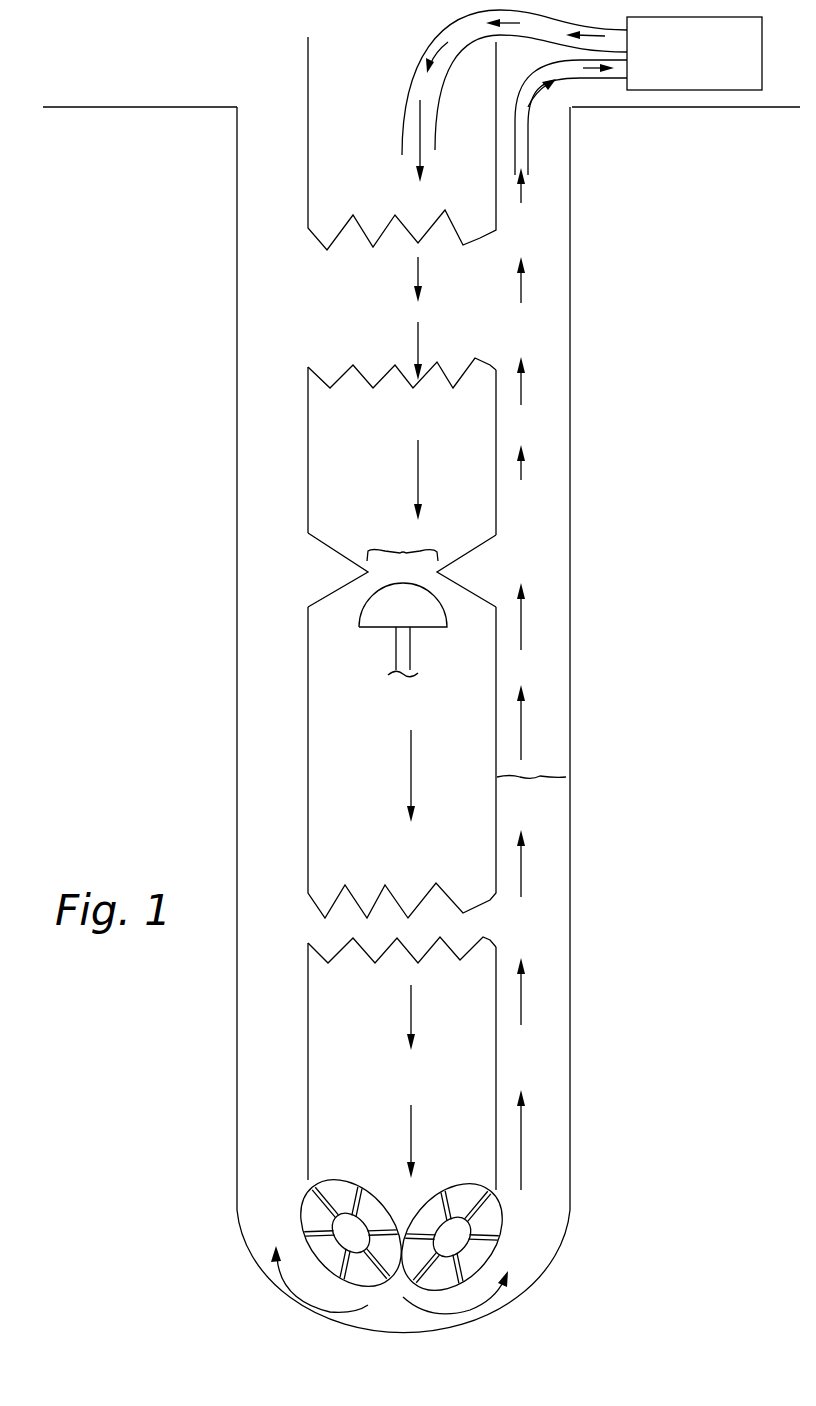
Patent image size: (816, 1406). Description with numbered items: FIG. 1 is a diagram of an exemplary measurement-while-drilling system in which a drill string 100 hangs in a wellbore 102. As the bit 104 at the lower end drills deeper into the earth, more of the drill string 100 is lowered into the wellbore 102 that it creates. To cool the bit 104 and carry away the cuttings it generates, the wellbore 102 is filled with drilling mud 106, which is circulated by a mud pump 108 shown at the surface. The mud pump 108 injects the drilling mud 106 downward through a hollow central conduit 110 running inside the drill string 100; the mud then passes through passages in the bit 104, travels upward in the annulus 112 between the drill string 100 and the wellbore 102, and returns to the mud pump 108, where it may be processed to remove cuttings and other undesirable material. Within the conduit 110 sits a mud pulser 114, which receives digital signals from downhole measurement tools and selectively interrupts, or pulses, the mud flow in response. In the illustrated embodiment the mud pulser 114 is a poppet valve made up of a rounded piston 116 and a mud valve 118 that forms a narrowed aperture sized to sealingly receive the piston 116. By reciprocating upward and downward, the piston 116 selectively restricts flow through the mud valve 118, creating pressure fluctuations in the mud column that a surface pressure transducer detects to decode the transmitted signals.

The drill string 100 is at (292, 174).
The wellbore 102 is at (236, 396).
The bit 104 is at (348, 1181).
The drilling mud 106 is at (281, 614).
The mud pump 108 is at (716, 92).
The central conduit 110 is at (312, 511).
The annulus 112 is at (540, 777).
The mud pulser 114 is at (340, 671).
The rounded piston 116 is at (448, 618).
The mud valve 118 is at (407, 547).